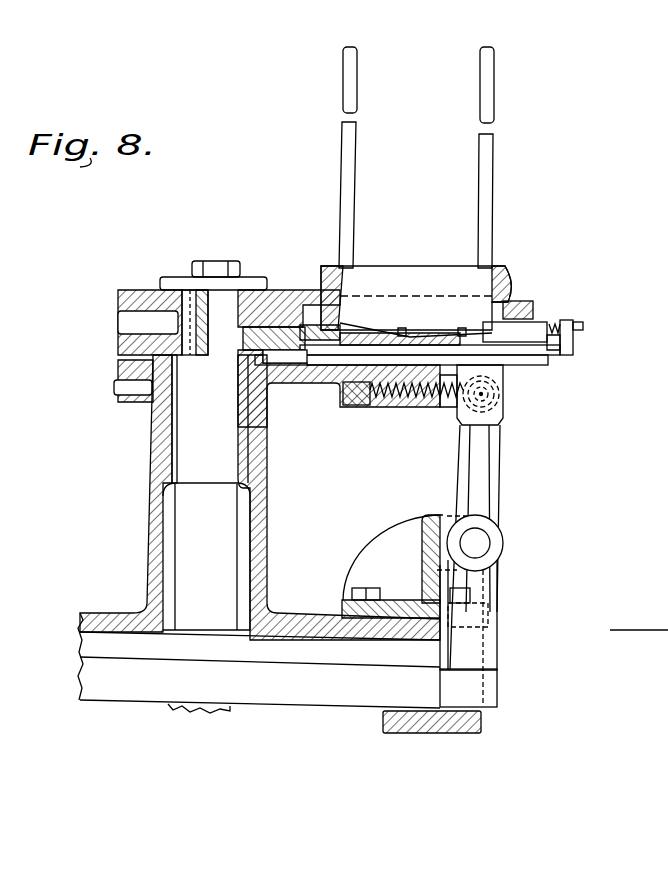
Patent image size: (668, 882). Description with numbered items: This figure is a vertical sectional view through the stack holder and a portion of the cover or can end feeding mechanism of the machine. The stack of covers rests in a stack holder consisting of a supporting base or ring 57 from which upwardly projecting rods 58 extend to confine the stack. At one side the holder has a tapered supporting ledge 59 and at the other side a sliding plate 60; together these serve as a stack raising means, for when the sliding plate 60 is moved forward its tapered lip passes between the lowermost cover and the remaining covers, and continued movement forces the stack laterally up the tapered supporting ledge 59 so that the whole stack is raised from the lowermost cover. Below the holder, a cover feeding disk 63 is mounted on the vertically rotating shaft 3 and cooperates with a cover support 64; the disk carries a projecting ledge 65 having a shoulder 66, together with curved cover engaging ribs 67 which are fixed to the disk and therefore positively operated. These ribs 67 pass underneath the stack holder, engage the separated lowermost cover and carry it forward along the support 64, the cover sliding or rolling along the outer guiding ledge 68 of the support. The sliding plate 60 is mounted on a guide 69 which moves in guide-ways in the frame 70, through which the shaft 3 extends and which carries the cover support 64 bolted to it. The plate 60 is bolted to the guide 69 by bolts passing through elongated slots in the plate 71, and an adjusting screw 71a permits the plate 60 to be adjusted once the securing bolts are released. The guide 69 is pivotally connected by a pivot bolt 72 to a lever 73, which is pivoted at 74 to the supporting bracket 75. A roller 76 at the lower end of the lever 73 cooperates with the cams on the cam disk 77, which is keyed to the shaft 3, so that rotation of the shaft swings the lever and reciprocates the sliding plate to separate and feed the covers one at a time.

The shaft 3 is at (227, 523).
The supporting base or ring 57 is at (510, 266).
The upwardly projecting rods 58 is at (357, 191).
The tapered supporting ledge 59 is at (330, 347).
The sliding plate 60 is at (515, 310).
The cover feeding disk 63 is at (280, 327).
The cover support 64 is at (455, 356).
The projecting ledge 65 is at (378, 348).
The shoulder 66 is at (352, 348).
The curved cover engaging ribs 67 is at (402, 336).
The outer guiding ledge 68 is at (462, 338).
The guide 69 is at (521, 373).
The frame 70 is at (264, 556).
The plate 71 is at (552, 352).
The adjusting screw 71a is at (590, 327).
The pivot bolt 72 is at (492, 406).
The lever 73 is at (495, 497).
The pivot 74 is at (483, 544).
The supporting bracket 75 is at (430, 546).
The roller 76 is at (505, 682).
The cam disk 77 is at (412, 708).